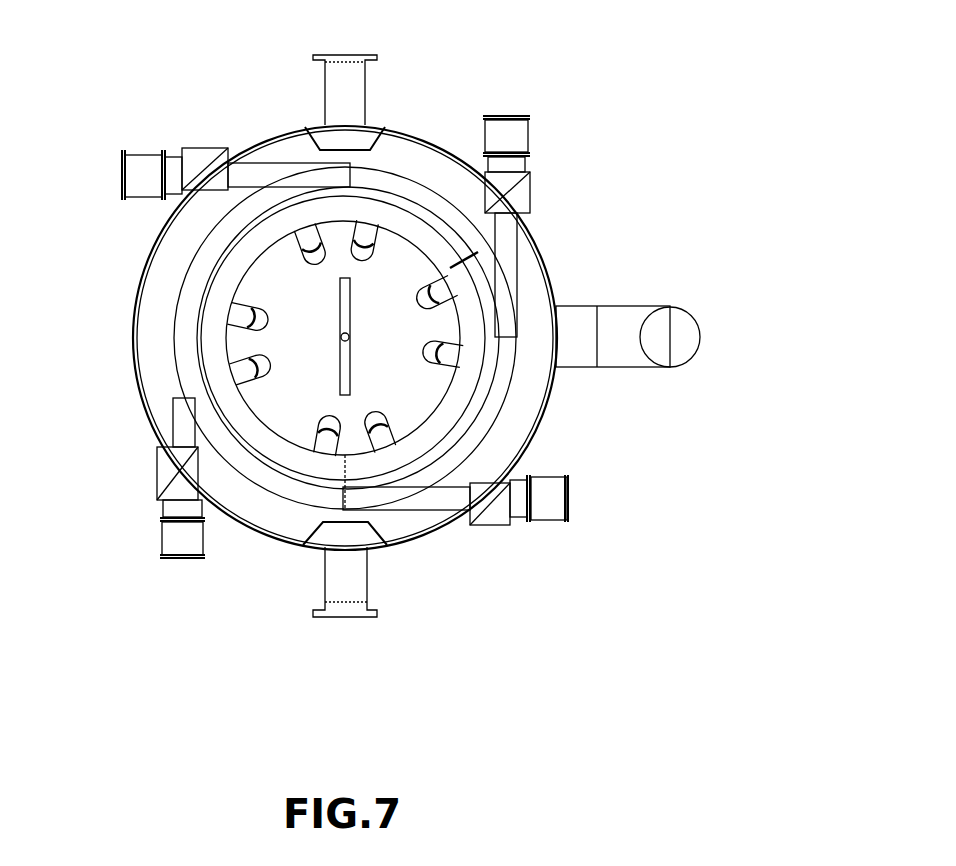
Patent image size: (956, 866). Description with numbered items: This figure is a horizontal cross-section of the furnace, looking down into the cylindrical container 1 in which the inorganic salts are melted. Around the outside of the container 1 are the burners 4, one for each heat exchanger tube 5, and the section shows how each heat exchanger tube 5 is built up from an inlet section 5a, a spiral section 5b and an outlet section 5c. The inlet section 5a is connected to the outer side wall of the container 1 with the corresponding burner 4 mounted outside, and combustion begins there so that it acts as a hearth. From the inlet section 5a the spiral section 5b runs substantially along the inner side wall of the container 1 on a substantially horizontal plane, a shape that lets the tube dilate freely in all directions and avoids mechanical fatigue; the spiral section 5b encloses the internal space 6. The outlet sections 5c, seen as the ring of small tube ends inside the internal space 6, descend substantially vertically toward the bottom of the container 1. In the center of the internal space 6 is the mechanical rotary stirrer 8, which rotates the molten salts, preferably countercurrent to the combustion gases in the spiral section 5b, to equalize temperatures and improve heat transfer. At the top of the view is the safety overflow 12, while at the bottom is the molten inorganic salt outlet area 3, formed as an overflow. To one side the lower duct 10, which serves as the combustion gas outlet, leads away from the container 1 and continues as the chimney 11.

The container 1 is at (405, 135).
The molten inorganic salt outlet area 3 is at (345, 580).
The burner 4 is at (140, 172).
The heat exchanger tube 5 is at (203, 350).
The inlet section 5a is at (213, 183).
The spiral section 5b is at (190, 298).
The outlet section 5c is at (313, 252).
The internal space 6 is at (418, 404).
The mechanical rotary stirrer 8 is at (352, 315).
The lower duct 10 is at (617, 308).
The chimney 11 is at (672, 333).
The safety overflow 12 is at (345, 100).